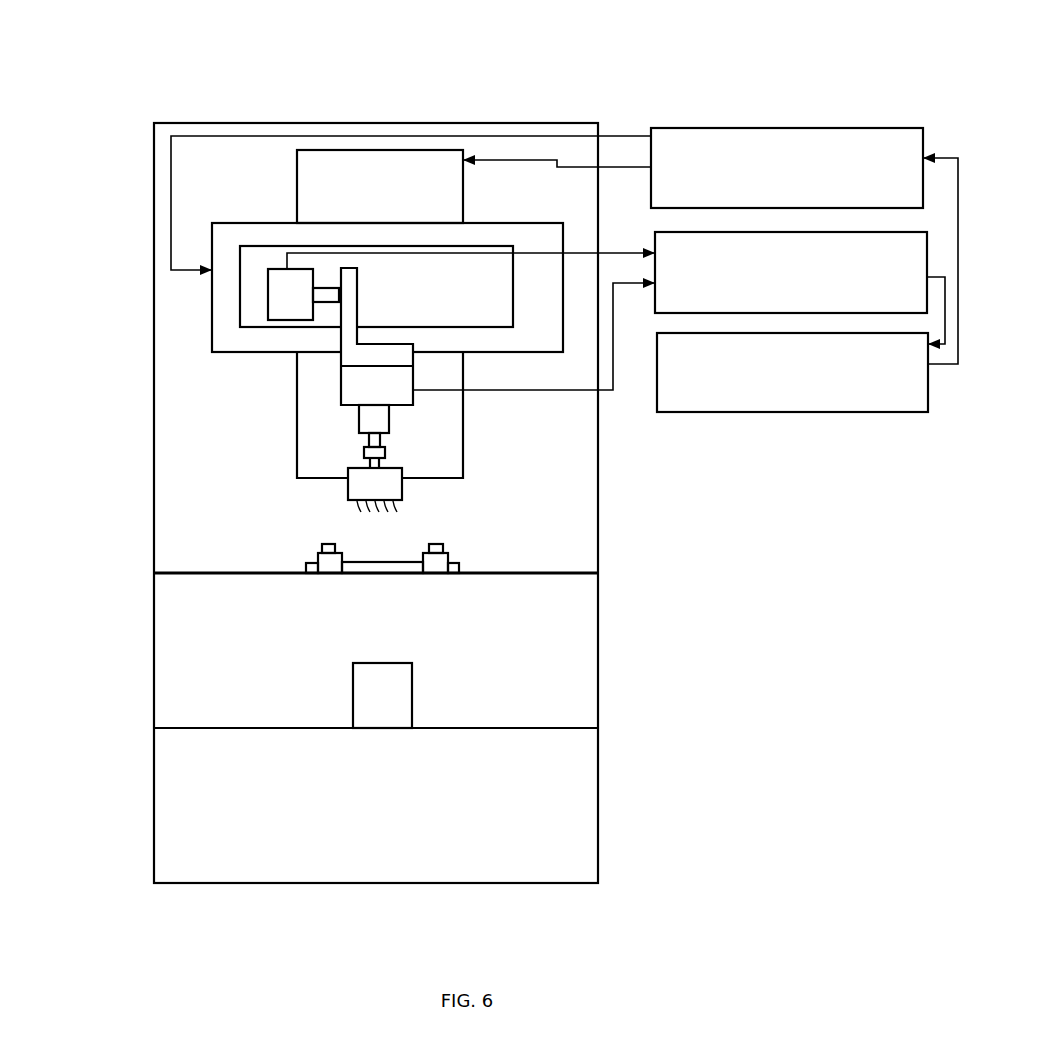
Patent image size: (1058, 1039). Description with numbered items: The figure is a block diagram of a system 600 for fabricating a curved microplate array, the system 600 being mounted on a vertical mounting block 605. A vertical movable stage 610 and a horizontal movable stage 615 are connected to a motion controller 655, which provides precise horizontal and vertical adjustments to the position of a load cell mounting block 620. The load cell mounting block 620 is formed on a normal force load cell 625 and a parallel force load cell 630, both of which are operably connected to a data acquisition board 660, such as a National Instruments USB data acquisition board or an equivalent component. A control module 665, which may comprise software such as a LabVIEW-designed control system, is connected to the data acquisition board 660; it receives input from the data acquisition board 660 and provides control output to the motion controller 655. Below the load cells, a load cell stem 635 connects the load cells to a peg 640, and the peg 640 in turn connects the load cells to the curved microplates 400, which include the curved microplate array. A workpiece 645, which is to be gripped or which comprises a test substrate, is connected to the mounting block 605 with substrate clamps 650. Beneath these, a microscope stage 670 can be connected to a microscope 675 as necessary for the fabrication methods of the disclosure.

The system 600 is at (128, 98).
The vertical mounting block 605 is at (154, 198).
The vertical movable stage 610 is at (347, 155).
The horizontal movable stage 615 is at (212, 340).
The load cell mounting block 620 is at (513, 293).
The normal force load cell 625 is at (268, 298).
The parallel force load cell 630 is at (340, 383).
The load cell stem 635 is at (359, 421).
The peg 640 is at (364, 461).
The curved microplates 400 is at (348, 491).
The workpiece 645 is at (362, 572).
The substrate clamps 650 is at (318, 554).
The motion controller 655 is at (750, 142).
The data acquisition board 660 is at (655, 315).
The control module 665 is at (803, 406).
The microscope stage 670 is at (179, 692).
The microscope 675 is at (175, 825).